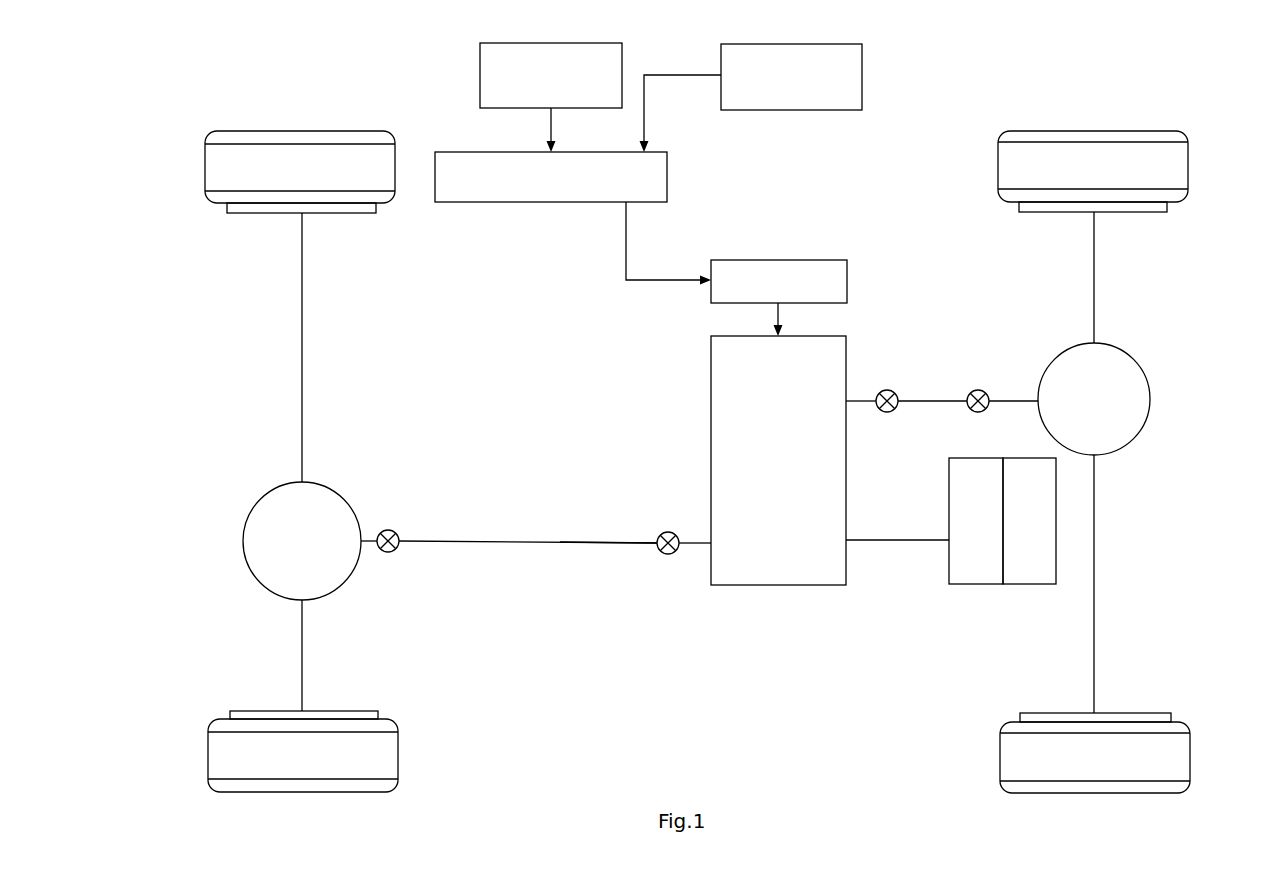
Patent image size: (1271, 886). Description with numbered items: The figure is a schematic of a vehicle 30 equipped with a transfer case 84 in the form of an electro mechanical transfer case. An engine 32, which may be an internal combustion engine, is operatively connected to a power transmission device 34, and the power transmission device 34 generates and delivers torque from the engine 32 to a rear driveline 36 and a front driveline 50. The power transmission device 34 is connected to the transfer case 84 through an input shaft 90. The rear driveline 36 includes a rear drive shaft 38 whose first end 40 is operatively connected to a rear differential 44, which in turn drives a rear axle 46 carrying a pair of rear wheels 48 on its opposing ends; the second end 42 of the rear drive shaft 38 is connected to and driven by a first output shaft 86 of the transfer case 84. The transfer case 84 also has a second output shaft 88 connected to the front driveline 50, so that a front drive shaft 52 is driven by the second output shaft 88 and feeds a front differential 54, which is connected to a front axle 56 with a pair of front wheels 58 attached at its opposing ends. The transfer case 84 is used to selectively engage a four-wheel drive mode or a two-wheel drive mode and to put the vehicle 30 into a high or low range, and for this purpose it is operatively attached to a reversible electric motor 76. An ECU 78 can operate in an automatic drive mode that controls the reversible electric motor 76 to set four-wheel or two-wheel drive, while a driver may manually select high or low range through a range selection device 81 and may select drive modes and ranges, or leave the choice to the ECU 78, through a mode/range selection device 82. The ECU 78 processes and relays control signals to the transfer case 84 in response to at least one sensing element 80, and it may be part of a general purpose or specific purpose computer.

The vehicle 30 is at (974, 95).
The engine 32 is at (1023, 586).
The power transmission device 34 is at (968, 586).
The rear driveline 36 is at (485, 566).
The rear drive shaft 38 is at (618, 545).
The first end 40 is at (370, 530).
The second end 42 is at (692, 528).
The rear differential 44 is at (262, 530).
The rear axle 46 is at (278, 331).
The rear wheels 48 is at (215, 163).
The front driveline 50 is at (985, 355).
The front drive shaft 52 is at (936, 403).
The front differential 54 is at (1127, 393).
The front axle 56 is at (1122, 263).
The front wheels 58 is at (1172, 174).
The reversible electric motor 76 is at (832, 288).
The ECU 78 is at (667, 190).
The sensing element 80 is at (862, 92).
The range selection device 81 is at (484, 75).
The mode/range selection device 82 is at (480, 92).
The transfer case 84 is at (846, 485).
The first output shaft 86 is at (696, 545).
The second output shaft 88 is at (864, 397).
The input shaft 90 is at (892, 545).